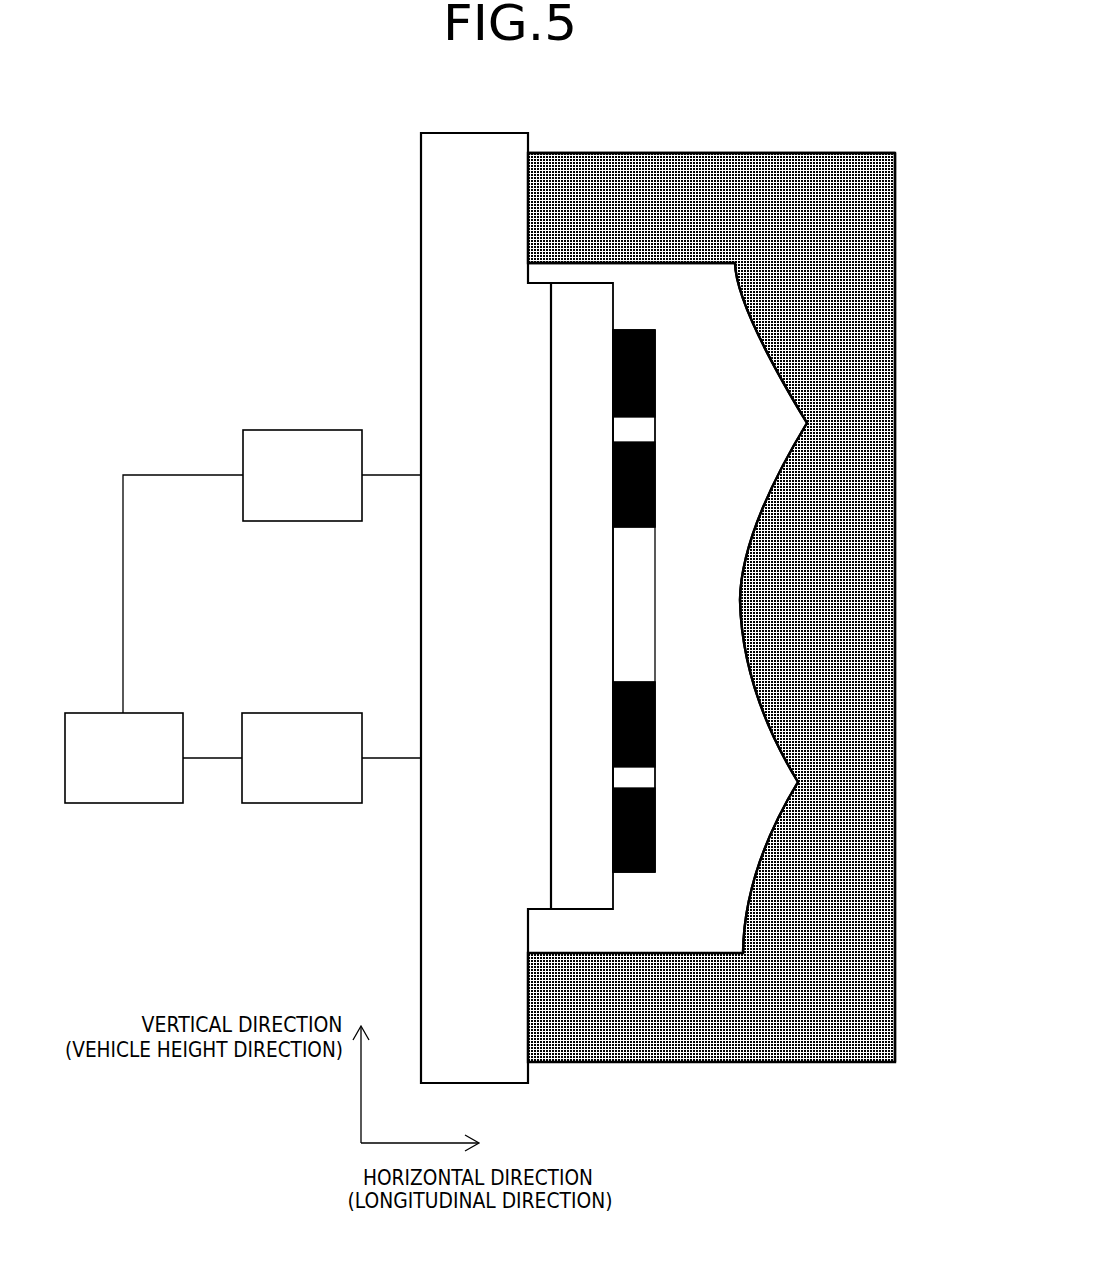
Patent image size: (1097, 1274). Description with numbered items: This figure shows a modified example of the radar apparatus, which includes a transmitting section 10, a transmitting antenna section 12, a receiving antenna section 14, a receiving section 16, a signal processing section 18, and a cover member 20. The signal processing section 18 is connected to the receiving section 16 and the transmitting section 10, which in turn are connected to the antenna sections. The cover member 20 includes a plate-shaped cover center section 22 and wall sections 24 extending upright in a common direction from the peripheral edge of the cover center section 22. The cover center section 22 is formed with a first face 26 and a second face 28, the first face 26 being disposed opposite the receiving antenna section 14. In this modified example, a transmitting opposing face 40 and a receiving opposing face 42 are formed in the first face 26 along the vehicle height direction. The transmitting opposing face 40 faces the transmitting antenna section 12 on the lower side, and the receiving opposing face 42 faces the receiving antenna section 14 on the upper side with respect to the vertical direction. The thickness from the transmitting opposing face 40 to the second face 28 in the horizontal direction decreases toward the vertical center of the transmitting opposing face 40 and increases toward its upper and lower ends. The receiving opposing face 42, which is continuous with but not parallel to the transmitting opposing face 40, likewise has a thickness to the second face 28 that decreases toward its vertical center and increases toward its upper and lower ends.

The transmitting section 10 is at (332, 711).
The transmitting antenna section 12 is at (662, 855).
The receiving antenna section 14 is at (661, 357).
The receiving section 16 is at (335, 428).
The signal processing section 18 is at (155, 711).
The cover member 20 is at (907, 133).
The cover center section 22 is at (897, 290).
The wall section 24 is at (688, 153).
The first face 26 is at (683, 518).
The second face 28 is at (905, 470).
The transmitting opposing face 40 is at (758, 743).
The receiving opposing face 42 is at (765, 477).